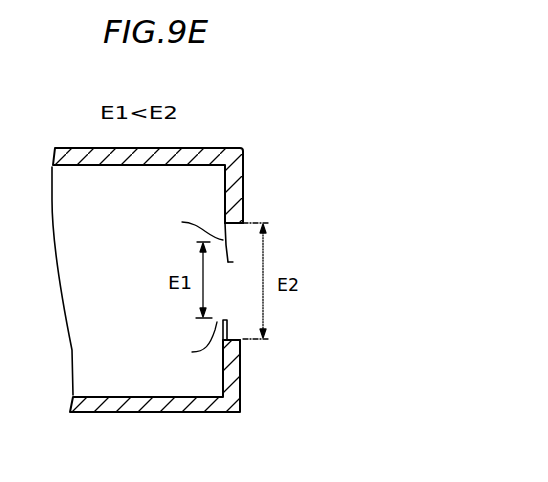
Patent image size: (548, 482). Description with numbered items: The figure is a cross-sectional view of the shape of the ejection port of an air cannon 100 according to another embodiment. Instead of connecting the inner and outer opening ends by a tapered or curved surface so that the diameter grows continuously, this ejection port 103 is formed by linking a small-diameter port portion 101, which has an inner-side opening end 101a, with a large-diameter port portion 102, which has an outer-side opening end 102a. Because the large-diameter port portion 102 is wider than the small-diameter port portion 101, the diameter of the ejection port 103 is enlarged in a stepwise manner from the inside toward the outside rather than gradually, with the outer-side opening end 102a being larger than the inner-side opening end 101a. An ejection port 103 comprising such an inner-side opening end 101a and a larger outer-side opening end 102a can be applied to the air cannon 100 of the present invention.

The air cannon 100 is at (205, 240).
The small-diameter port portion 101 is at (229, 264).
The inner-side opening end 101a is at (180, 289).
The large-diameter port portion 102 is at (214, 289).
The outer-side opening end 102a is at (244, 214).
The ejection port 103 is at (236, 258).